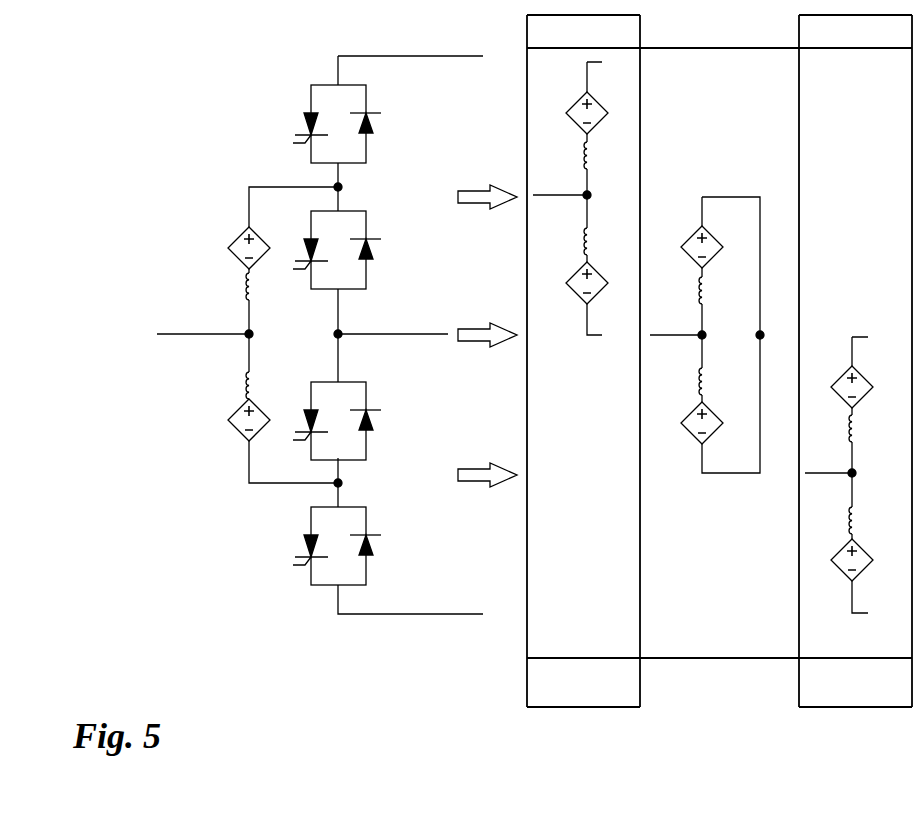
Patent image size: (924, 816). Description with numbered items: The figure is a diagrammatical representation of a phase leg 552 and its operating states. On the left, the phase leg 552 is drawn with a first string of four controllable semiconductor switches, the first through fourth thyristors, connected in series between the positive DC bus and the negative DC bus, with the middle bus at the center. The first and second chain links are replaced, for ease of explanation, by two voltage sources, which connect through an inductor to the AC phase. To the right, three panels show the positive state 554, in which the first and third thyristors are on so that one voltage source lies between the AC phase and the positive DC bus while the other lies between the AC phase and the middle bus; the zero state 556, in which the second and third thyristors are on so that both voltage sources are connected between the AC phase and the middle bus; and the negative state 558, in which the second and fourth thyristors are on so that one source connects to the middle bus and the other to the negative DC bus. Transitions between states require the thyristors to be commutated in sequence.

The phase leg 552 is at (318, 668).
The positive state 554 is at (569, 740).
The zero state 556 is at (707, 740).
The negative state 558 is at (837, 740).